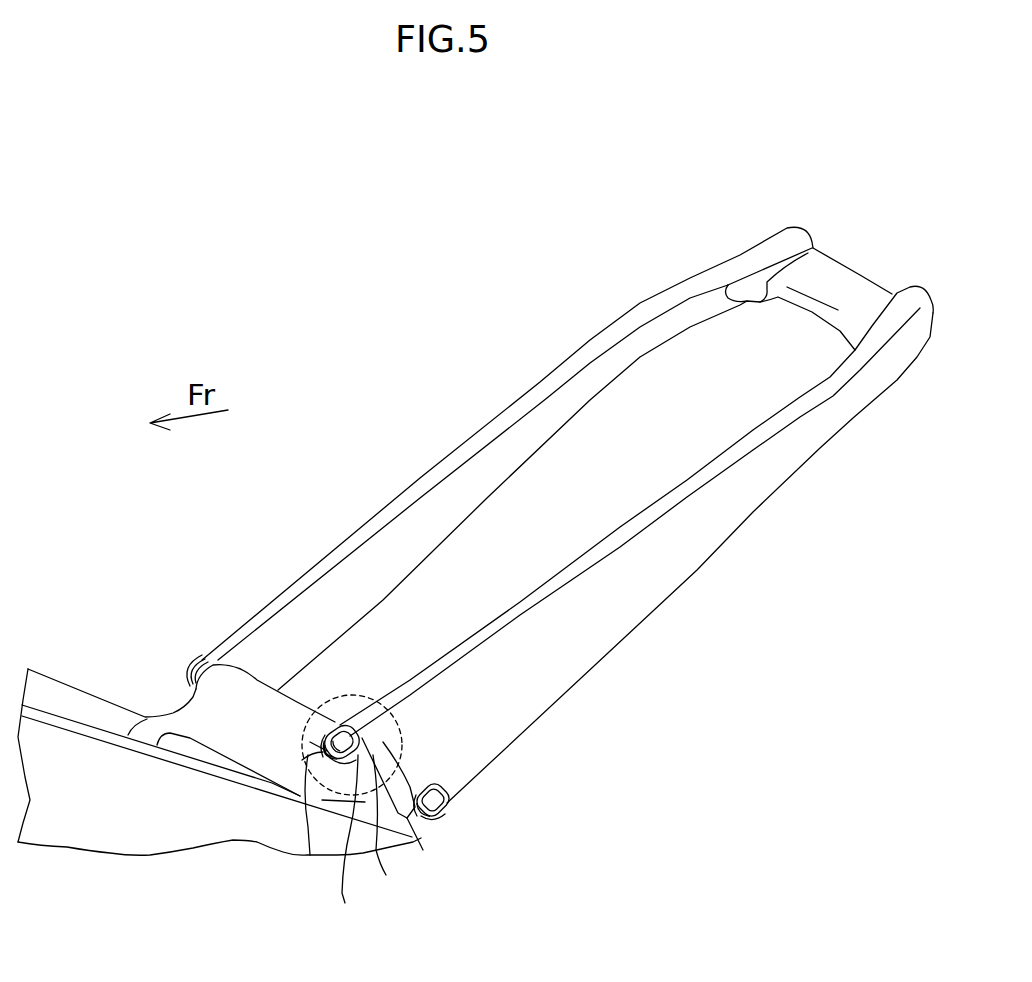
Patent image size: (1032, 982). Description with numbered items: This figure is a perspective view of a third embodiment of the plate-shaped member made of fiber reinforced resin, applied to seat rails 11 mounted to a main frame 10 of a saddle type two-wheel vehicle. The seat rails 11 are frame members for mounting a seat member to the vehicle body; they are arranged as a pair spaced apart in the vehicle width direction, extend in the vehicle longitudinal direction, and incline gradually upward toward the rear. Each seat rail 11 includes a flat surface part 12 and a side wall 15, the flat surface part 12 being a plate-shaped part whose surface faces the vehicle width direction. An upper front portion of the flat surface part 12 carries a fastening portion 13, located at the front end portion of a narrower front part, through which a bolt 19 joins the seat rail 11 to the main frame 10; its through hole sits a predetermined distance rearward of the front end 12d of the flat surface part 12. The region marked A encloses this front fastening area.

The main frame 10 is at (110, 832).
The seat rail 11 is at (410, 463).
The flat surface part 12 is at (422, 749).
The front end 12d is at (310, 855).
The fastening portion 13 is at (376, 850).
The side wall 15 is at (338, 723).
The bolt 19 is at (342, 893).
The region A is at (305, 757).